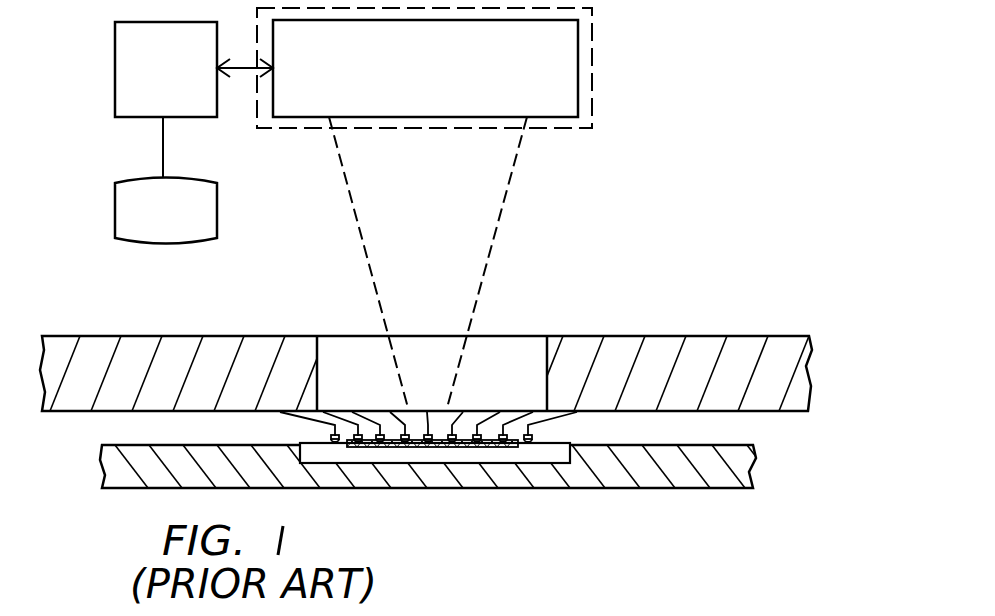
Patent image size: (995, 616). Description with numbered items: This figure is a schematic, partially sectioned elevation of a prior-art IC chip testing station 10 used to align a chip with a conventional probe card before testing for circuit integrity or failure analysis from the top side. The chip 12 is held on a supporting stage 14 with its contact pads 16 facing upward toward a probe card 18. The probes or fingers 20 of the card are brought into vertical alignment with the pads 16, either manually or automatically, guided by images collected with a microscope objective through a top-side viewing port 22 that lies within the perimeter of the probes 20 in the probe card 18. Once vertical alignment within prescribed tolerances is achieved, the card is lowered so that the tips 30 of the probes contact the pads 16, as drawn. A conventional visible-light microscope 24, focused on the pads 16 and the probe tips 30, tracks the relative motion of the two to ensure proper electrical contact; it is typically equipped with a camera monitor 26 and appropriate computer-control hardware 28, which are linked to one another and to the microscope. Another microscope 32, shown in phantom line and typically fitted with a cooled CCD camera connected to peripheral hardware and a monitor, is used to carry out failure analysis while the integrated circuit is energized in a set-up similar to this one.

The prior art test system 10 is at (700, 262).
The chip 12 is at (555, 452).
The supporting stage 14 is at (725, 467).
The contact pads 16 is at (532, 446).
The probe card 18 is at (750, 336).
The probes 20 is at (578, 416).
The top-side viewing port 22 is at (497, 357).
The visible-light microscope 24 is at (578, 62).
The camera monitor 26 is at (115, 212).
The computer-control hardware 28 is at (115, 68).
The tips 30 is at (315, 428).
The microscope 32 is at (592, 100).